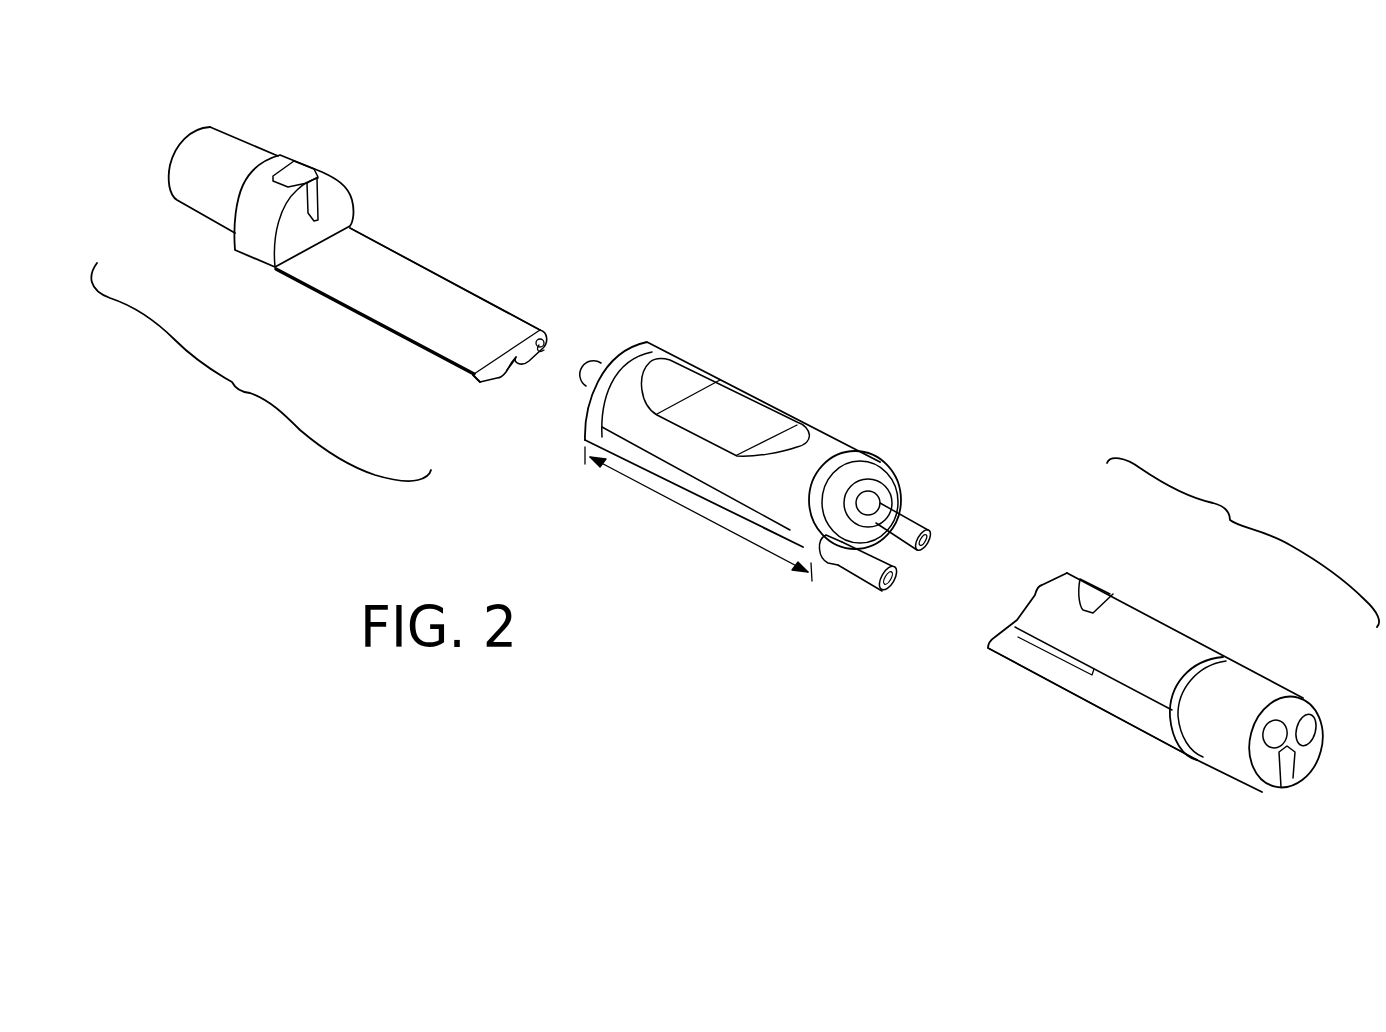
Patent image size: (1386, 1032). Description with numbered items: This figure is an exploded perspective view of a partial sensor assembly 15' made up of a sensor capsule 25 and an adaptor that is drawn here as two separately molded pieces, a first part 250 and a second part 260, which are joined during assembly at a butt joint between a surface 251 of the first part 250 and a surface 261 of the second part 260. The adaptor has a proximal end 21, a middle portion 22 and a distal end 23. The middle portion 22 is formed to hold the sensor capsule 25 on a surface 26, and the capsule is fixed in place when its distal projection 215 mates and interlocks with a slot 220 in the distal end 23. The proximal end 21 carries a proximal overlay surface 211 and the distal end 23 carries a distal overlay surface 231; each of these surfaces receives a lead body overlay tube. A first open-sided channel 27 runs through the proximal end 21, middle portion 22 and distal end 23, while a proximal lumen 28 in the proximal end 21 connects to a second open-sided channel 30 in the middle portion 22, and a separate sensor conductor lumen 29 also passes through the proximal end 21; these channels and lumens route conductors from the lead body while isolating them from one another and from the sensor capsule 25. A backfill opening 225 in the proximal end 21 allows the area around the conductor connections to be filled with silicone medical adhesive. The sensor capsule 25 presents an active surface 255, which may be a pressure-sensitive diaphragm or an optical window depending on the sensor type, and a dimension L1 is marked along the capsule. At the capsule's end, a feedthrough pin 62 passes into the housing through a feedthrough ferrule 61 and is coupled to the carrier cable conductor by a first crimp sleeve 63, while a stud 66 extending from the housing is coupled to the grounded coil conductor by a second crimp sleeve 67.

The partial sensor assembly 15' is at (857, 227).
The proximal end 21 is at (1168, 770).
The middle portion 22 is at (372, 350).
The distal end 23 is at (199, 255).
The sensor capsule 25 is at (645, 528).
The surface 26 is at (388, 283).
The first open-sided channel 27 is at (507, 366).
The proximal lumen 28 is at (1305, 733).
The sensor conductor lumen 29 is at (1273, 733).
The second open-sided channel 30 is at (553, 346).
The feedthrough ferrule 61 is at (884, 478).
The feedthrough pin 62 is at (874, 502).
The first crimp sleeve 63 is at (912, 530).
The stud 66 is at (838, 548).
The second crimp sleeve 67 is at (866, 566).
The proximal overlay surface 211 is at (1233, 722).
The distal projection 215 is at (594, 362).
The slot 220 is at (277, 172).
The backfill opening 225 is at (1060, 588).
The distal overlay surface 231 is at (206, 162).
The first part 250 is at (1243, 542).
The surface 251 is at (995, 640).
The active surface 255 is at (725, 415).
The second part 260 is at (261, 372).
The surface 261 is at (483, 367).
The length L1 is at (698, 514).